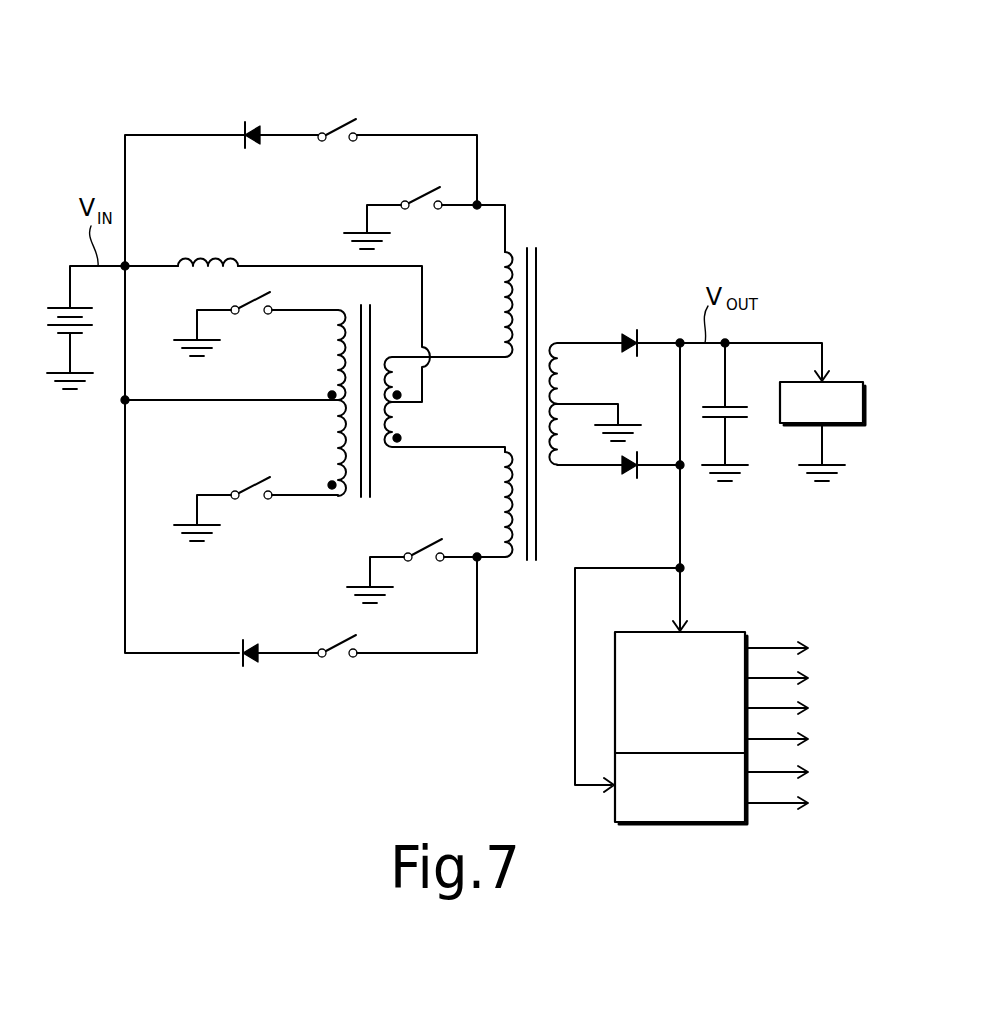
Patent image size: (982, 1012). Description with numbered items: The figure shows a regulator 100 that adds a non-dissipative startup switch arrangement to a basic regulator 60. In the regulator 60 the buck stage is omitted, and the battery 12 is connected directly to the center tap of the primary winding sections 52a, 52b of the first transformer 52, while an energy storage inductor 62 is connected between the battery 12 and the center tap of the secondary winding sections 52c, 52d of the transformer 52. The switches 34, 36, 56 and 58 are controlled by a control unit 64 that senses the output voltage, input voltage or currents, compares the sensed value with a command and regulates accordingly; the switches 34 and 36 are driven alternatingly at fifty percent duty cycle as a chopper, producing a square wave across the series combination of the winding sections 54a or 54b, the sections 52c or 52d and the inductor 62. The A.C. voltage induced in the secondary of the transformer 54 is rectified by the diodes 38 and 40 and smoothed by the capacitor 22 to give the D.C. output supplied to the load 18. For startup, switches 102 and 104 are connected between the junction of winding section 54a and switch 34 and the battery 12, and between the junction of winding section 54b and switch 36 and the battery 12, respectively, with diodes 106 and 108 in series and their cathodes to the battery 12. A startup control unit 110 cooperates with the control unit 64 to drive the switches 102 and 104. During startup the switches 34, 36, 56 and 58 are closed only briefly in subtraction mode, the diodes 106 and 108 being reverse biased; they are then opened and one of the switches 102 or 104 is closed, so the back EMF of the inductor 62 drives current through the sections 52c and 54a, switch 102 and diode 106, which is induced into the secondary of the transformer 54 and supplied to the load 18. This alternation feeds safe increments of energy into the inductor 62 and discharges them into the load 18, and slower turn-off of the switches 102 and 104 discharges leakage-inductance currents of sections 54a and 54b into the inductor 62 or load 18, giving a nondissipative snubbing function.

The regulator 100 is at (299, 98).
The battery 12 is at (58, 306).
The load 18 is at (837, 380).
The capacitor 22 is at (742, 421).
The switch 34 is at (428, 190).
The switch 36 is at (425, 548).
The diode 38 is at (623, 340).
The diode 40 is at (628, 476).
The first transformer 52 is at (362, 516).
The primary winding section 52a is at (338, 355).
The primary winding section 52b is at (338, 455).
The secondary winding section 52c is at (395, 378).
The secondary winding section 52d is at (395, 425).
The transformer 54 is at (549, 229).
The winding section 54a is at (503, 300).
The winding section 54b is at (503, 510).
The switch 56 is at (264, 292).
The switch 58 is at (262, 481).
The regulator 60 is at (247, 235).
The energy storage inductor 62 is at (200, 257).
The control unit 64 is at (730, 630).
The switch 102 is at (343, 122).
The switch 104 is at (340, 642).
The diode 106 is at (252, 127).
The diode 108 is at (252, 661).
The startup control unit 110 is at (685, 824).